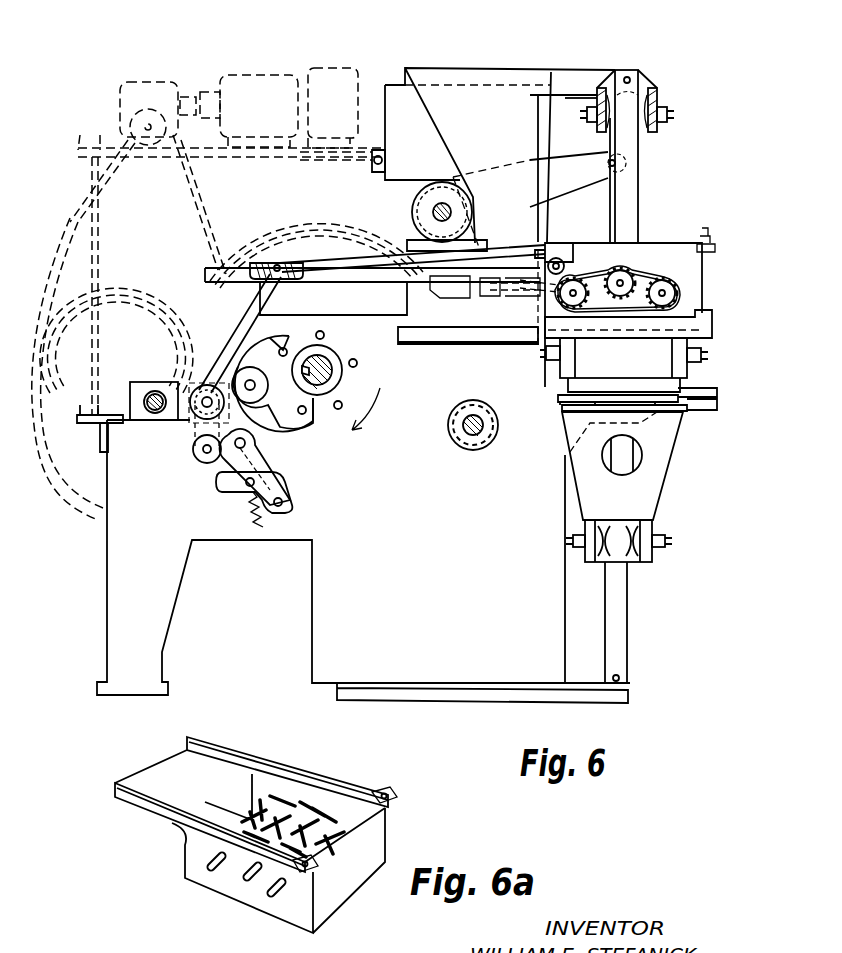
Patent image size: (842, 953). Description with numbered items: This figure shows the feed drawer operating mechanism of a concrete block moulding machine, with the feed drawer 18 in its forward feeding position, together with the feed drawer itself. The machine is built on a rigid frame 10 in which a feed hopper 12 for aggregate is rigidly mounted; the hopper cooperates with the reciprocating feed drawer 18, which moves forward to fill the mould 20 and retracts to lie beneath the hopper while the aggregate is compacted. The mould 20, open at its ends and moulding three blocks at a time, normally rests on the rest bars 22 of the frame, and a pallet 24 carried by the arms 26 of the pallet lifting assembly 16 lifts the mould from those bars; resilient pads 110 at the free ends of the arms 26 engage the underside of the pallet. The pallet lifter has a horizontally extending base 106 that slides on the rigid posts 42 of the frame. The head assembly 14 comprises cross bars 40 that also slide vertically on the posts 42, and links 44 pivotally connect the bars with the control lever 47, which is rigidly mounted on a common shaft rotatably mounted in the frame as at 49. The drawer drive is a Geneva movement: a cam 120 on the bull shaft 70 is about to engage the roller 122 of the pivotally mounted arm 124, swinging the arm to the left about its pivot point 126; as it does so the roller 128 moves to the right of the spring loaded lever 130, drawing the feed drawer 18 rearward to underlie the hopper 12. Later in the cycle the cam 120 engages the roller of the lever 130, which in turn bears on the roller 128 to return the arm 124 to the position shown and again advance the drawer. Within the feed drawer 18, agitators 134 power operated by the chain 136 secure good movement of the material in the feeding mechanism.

In FIG. 6, the rigid frame 10 is at (307, 658).
In FIG. 6, the feed hopper 12 is at (392, 92).
In FIG. 6, the head assembly 14 is at (713, 129).
In FIG. 6, the pallet lifting assembly 16 is at (690, 562).
In FIG. 6, the feed drawer 18 is at (670, 250).
In FIG. 6A, the feed drawer 18 is at (378, 828).
In FIG. 6, the mould 20 is at (672, 346).
In FIG. 6, the rest bars 22 is at (714, 406).
In FIG. 6, the pallet 24 is at (717, 392).
In FIG. 6, the arms 26 is at (675, 436).
In FIG. 6, the cross bars 40 is at (660, 96).
In FIG. 6, the rigid posts 42 is at (633, 72).
In FIG. 6, the links 44 is at (608, 142).
In FIG. 6, the control lever 47 is at (584, 193).
In FIG. 6, the shaft mounting 49 is at (435, 212).
In FIG. 6, the bull shaft 70 is at (333, 358).
In FIG. 6, the horizontally extending base 106 is at (655, 565).
In FIG. 6, the resilient pads 110 is at (558, 404).
In FIG. 6, the cam 120 is at (330, 425).
In FIG. 6, the roller 122 is at (263, 333).
In FIG. 6, the arm 124 is at (230, 345).
In FIG. 6, the pivot point 126 is at (203, 418).
In FIG. 6, the roller 128 is at (200, 460).
In FIG. 6, the spring loaded lever 130 is at (255, 458).
In FIG. 6A, the agitators 134 is at (265, 796).
In FIG. 6, the chain 136 is at (685, 298).